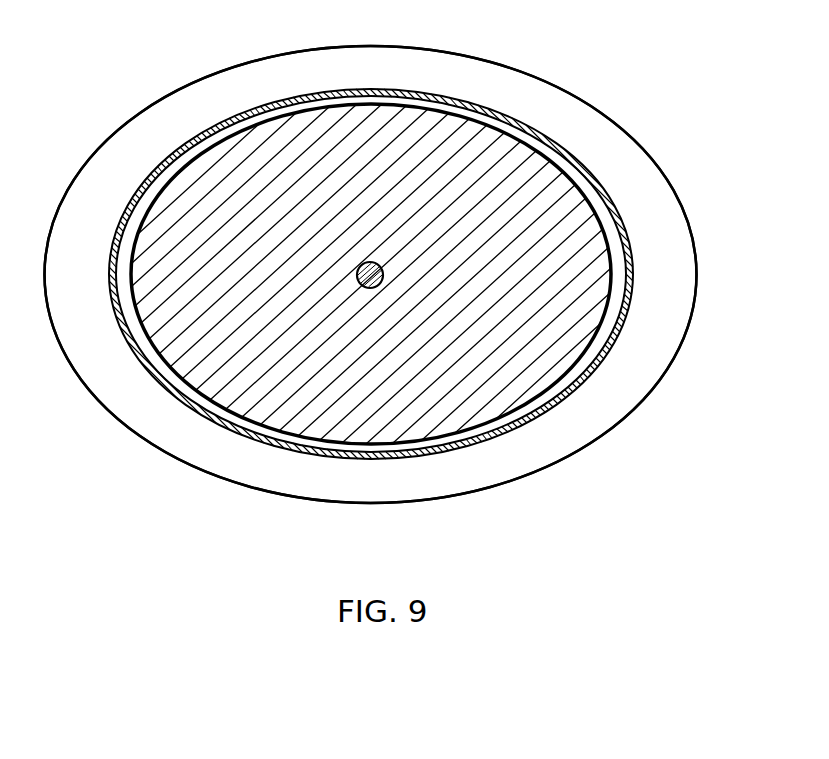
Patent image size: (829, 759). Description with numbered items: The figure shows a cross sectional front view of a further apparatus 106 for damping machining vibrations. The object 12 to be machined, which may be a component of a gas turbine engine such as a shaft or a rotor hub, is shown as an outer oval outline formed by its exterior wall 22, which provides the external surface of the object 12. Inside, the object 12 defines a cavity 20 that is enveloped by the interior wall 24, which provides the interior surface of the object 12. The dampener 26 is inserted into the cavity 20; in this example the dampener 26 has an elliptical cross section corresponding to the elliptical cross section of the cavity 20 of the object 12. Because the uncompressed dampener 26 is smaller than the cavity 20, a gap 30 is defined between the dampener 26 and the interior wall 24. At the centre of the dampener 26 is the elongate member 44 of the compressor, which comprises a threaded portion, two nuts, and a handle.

The object 12 is at (635, 387).
The cavity 20 is at (382, 455).
The exterior wall 22 is at (698, 277).
The interior wall 24 is at (505, 113).
The dampener 26 is at (253, 235).
The gap 30 is at (590, 172).
The elongate member 44 is at (362, 263).
The further apparatus 106 is at (85, 458).